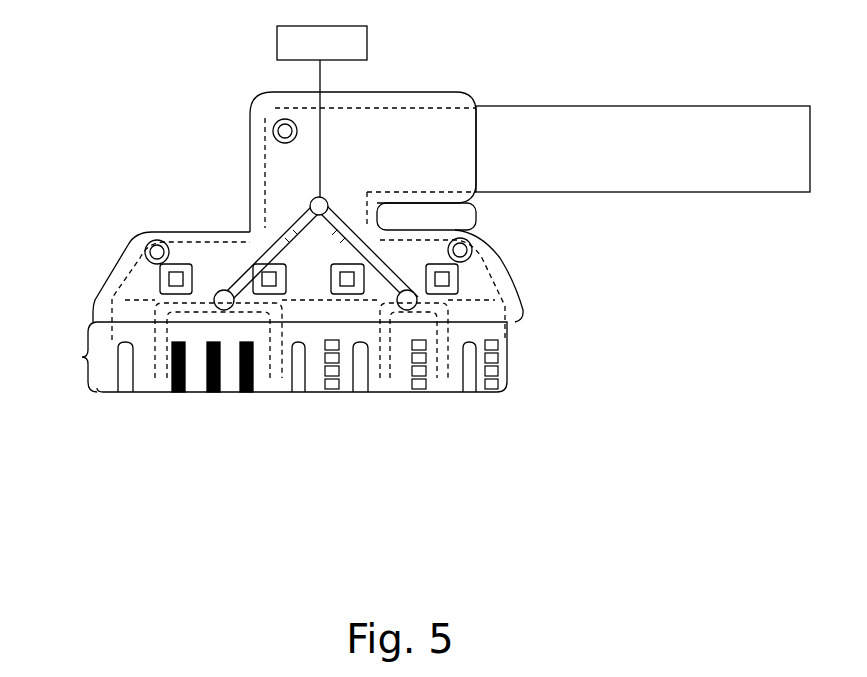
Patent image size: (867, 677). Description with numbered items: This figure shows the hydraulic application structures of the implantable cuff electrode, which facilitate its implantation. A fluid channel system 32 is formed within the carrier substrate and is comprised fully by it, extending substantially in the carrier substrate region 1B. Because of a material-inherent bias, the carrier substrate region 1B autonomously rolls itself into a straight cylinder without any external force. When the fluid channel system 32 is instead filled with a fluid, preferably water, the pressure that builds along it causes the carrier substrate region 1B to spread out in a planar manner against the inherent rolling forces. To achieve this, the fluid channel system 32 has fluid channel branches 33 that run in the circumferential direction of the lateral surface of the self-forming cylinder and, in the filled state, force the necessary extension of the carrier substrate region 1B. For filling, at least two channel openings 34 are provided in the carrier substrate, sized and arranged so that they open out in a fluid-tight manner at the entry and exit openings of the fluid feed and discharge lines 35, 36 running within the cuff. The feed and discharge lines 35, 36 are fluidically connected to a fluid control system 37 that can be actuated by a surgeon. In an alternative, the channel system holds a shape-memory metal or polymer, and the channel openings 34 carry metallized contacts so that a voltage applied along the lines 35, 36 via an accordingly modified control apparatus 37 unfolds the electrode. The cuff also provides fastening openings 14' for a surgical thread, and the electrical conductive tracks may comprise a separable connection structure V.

The fluid control system 37 is at (332, 54).
The fluid channel system 32 is at (157, 310).
The fastening openings 14' is at (323, 171).
The fluid feed line 35 is at (284, 222).
The fluid discharge line 36 is at (353, 222).
The channel openings 34 is at (220, 290).
The carrier substrate region 1B is at (283, 357).
The fluid channel branches 33 is at (272, 378).
The separable connection structure V is at (657, 66).